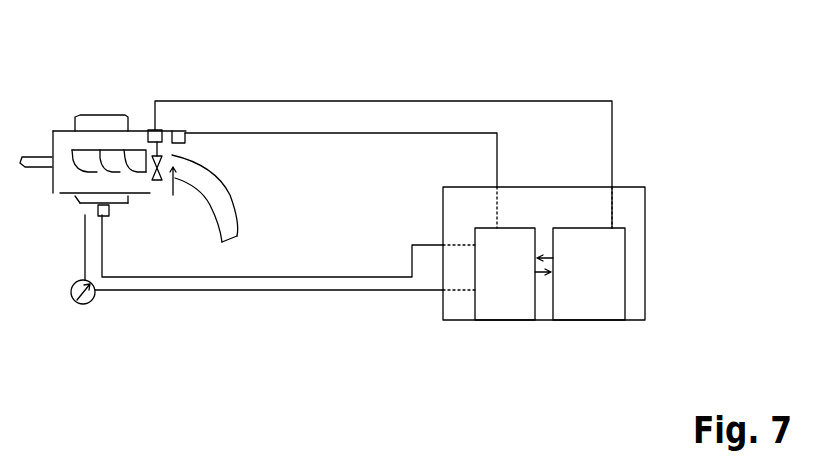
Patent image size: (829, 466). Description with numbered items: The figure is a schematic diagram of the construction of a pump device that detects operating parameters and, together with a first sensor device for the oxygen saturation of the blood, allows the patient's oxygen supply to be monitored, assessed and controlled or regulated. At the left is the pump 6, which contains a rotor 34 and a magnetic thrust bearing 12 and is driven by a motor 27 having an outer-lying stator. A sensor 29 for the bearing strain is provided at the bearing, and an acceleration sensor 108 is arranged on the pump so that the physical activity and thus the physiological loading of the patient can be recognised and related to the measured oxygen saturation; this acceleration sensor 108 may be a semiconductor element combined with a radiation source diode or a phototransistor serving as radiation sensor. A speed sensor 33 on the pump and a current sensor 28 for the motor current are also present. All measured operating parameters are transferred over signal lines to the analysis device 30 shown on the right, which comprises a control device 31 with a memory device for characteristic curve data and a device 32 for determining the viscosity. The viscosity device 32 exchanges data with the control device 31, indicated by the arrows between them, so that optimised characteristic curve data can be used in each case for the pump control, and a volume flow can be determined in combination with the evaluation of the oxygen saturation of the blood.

The pump 6 is at (57, 127).
The motor 27 is at (82, 113).
The sensor for the bearing strain 29 is at (148, 130).
The acceleration sensor 108 is at (185, 133).
The magnetic thrust bearing 12 is at (157, 180).
The rotor 34 is at (52, 193).
The speed sensor 33 is at (108, 212).
The current sensor 28 is at (90, 304).
The analysis device 30 is at (645, 207).
The control device 31 is at (503, 320).
The device for determining the viscosity 32 is at (593, 320).